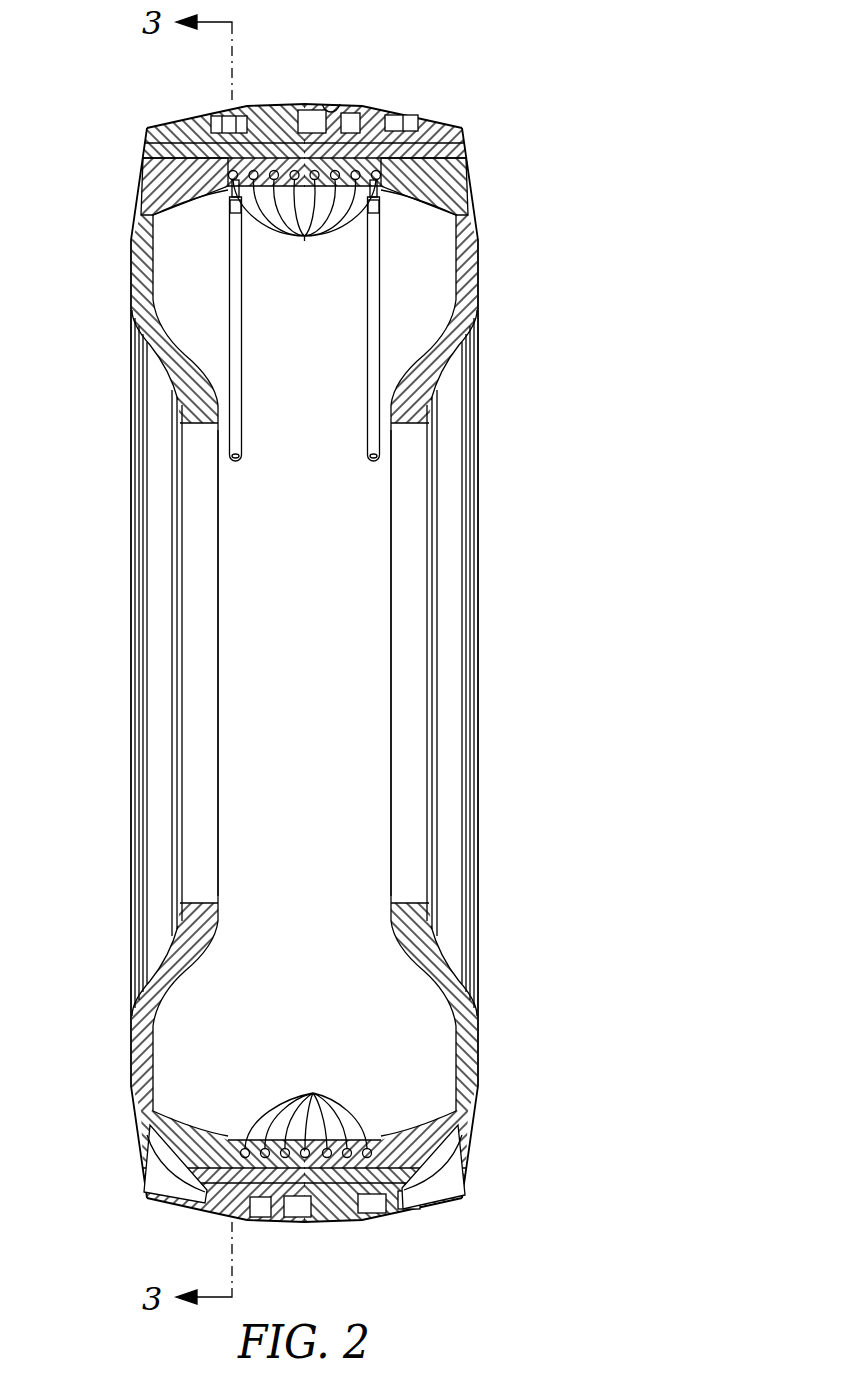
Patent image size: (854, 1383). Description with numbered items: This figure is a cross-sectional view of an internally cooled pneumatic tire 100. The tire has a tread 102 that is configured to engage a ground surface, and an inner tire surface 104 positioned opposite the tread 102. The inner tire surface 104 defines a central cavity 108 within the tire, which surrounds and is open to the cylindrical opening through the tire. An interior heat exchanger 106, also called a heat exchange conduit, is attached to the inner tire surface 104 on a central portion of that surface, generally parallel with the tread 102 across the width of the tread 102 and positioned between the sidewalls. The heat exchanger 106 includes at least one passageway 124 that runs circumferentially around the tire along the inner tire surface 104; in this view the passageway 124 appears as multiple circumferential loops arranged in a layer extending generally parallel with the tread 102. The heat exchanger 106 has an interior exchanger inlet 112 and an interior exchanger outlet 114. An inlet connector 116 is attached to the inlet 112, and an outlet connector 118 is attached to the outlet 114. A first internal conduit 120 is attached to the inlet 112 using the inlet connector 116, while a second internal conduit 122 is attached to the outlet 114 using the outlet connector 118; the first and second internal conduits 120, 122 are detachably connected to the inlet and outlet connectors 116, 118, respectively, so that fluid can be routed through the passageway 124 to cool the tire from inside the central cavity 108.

The pneumatic tire 100 is at (371, 616).
The tread 102 is at (314, 102).
The inner tire surface 104 is at (270, 166).
The interior heat exchanger 106 is at (360, 166).
The central cavity 108 is at (318, 1016).
The interior exchanger inlet 112 is at (383, 176).
The interior exchanger outlet 114 is at (232, 174).
The inlet connector 116 is at (445, 213).
The outlet connector 118 is at (165, 212).
The first internal conduit 120 is at (377, 327).
The second internal conduit 122 is at (232, 327).
The passageway 124 is at (305, 241).